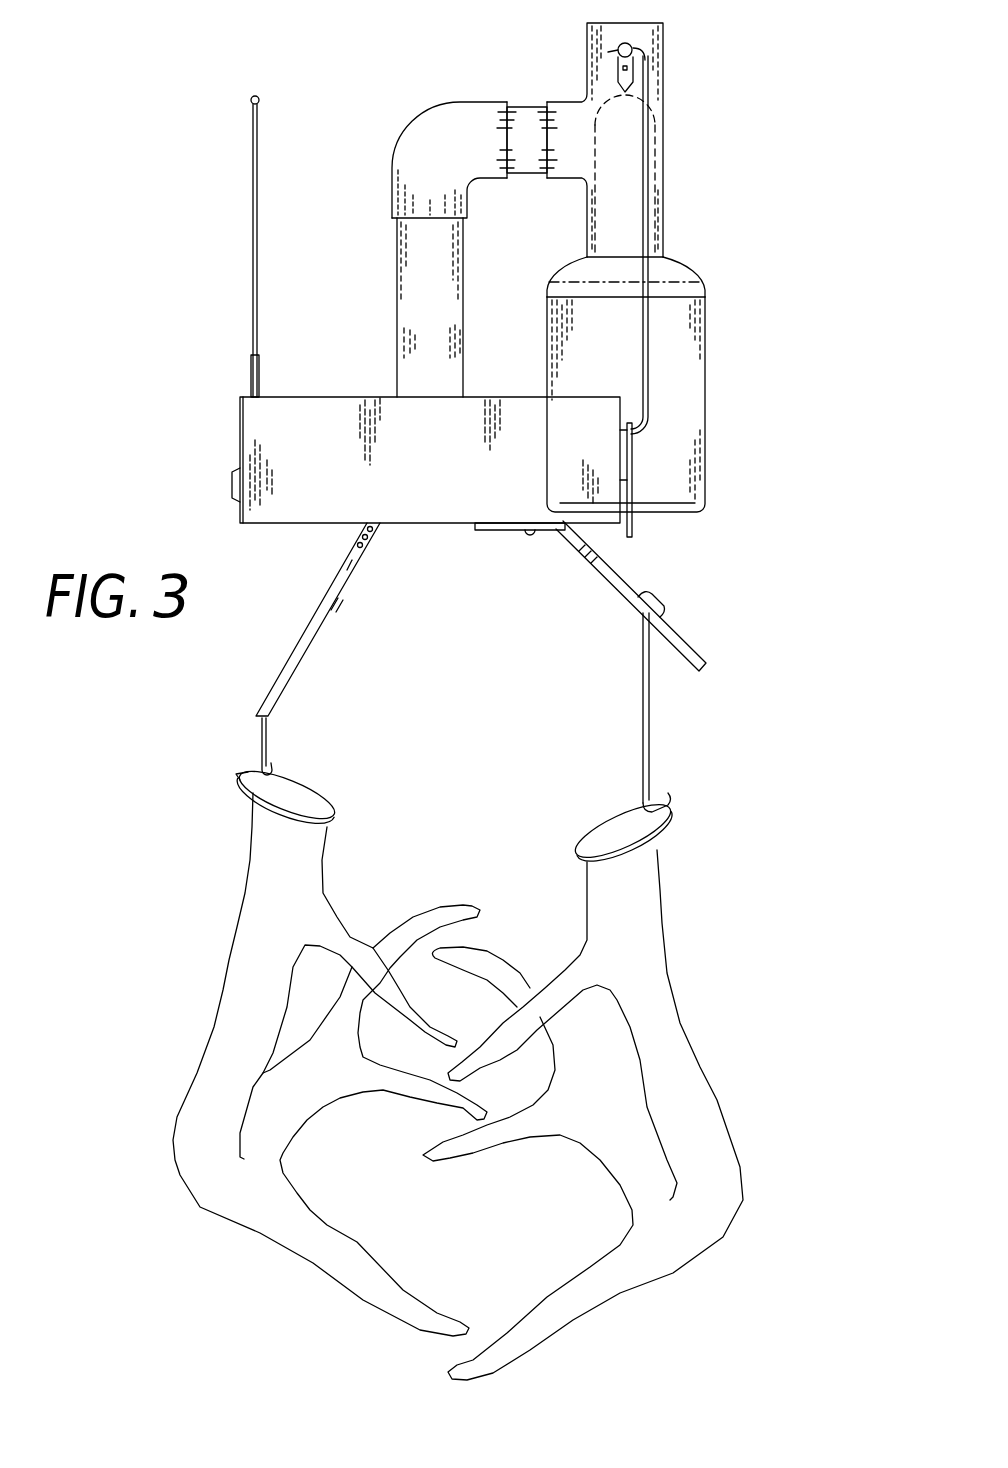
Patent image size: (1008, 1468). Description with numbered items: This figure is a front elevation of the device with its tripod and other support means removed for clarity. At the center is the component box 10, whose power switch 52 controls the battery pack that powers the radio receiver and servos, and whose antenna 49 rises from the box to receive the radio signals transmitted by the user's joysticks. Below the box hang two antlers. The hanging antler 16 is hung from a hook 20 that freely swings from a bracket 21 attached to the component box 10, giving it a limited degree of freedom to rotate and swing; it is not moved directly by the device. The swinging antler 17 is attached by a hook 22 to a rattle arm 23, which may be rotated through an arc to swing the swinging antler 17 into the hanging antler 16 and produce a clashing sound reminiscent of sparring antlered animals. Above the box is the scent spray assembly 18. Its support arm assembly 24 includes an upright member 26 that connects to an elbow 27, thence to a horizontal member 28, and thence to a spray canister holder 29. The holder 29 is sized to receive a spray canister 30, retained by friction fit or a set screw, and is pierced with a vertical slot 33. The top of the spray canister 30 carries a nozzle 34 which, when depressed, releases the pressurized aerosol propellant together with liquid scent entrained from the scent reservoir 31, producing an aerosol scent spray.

The component box 10 is at (241, 437).
The hanging antler 16 is at (660, 887).
The swinging antler 17 is at (245, 890).
The scent spray assembly 18 is at (712, 183).
The hook 20 is at (643, 750).
The bracket 21 is at (608, 582).
The hook 22 is at (267, 745).
The rattle arm 23 is at (347, 578).
The support arm assembly 24 is at (367, 133).
The upright member 26 is at (397, 320).
The elbow 27 is at (422, 118).
The horizontal member 28 is at (517, 102).
The spray canister holder 29 is at (665, 95).
The spray canister 30 is at (652, 145).
The scent reservoir 31 is at (708, 398).
The vertical slot 33 is at (627, 43).
The nozzle 34 is at (618, 70).
The antenna 49 is at (254, 235).
The power switch 52 is at (231, 485).